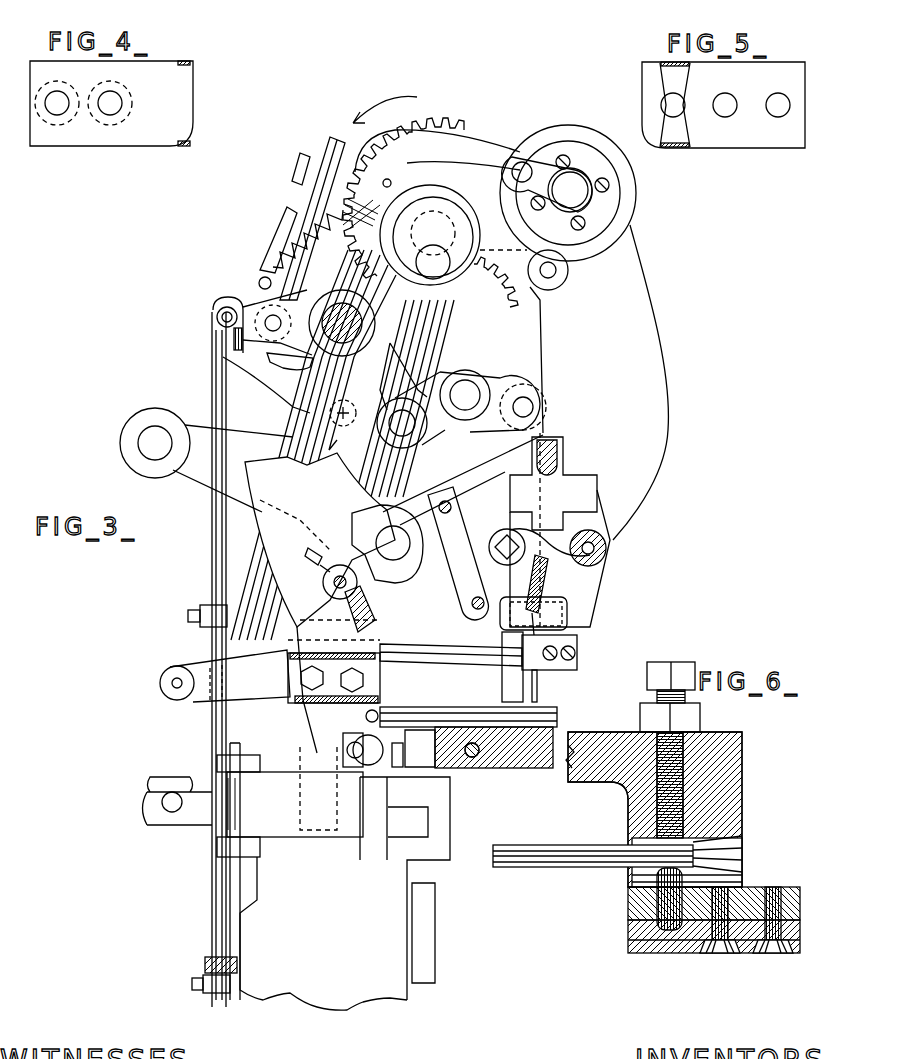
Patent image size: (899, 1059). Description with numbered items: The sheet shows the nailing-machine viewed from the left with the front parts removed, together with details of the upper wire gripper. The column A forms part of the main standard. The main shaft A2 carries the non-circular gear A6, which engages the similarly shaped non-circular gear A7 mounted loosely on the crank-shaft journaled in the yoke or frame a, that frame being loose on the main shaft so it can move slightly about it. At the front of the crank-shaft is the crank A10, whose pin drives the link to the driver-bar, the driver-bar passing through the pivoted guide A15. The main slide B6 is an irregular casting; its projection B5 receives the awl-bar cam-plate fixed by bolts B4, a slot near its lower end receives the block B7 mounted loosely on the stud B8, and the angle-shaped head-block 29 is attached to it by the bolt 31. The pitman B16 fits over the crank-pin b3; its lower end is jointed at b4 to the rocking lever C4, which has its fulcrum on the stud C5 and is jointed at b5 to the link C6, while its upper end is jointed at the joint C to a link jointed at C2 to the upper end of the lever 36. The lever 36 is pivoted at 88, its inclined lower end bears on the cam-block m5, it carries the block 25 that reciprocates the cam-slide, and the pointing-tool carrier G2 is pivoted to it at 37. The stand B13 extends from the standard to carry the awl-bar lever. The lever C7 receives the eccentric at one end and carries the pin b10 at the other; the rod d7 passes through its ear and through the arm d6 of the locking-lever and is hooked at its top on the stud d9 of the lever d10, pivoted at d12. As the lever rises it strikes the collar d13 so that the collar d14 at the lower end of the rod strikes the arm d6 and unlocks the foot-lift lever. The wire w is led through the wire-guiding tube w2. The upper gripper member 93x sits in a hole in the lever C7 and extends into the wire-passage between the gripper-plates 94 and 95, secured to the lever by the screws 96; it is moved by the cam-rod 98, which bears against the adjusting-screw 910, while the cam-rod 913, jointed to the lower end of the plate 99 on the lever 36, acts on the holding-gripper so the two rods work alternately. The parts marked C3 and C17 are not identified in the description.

In FIG. 4, the gripper-plate 95 is at (182, 89).
In FIG. 6, the gripper-plate 95 is at (640, 945).
In FIG. 3, the gripper-plate 95 is at (578, 648).
In FIG. 5, the gripper-plate 94 is at (757, 140).
In FIG. 6, the gripper-plate 94 is at (640, 930).
In FIG. 6, the adjusting-screw 910 is at (678, 668).
In FIG. 6, the lever C7 is at (735, 752).
In FIG. 3, the lever C7 is at (503, 668).
In FIG. 6, the cam-rod 98 is at (580, 845).
In FIG. 3, the cam-rod 98 is at (450, 652).
In FIG. 6, the upper gripper member 93x is at (657, 878).
In FIG. 6, the screws 96 is at (778, 968).
In FIG. 3, the screws 96 is at (578, 658).
In FIG. 3, the lever 36 is at (310, 755).
In FIG. 3, the non-circular gear A6 is at (437, 112).
In FIG. 3, the main shaft A2 is at (450, 213).
In FIG. 3, the crank-pin b3 is at (427, 250).
In FIG. 3, the yoke or frame a is at (462, 155).
In FIG. 3, the non-circular gear A7 is at (503, 283).
In FIG. 3, the crank A10 is at (540, 168).
In FIG. 3, the main slide B6 is at (582, 134).
In FIG. 3, the pivot d12 is at (280, 316).
In FIG. 3, the stud d9 is at (226, 305).
In FIG. 3, the lever d10 is at (274, 386).
In FIG. 3, the rod d7 is at (213, 560).
In FIG. 3, the stand B13 is at (178, 470).
In FIG. 3, the joint b4 is at (350, 420).
In FIG. 3, the pitman B16 is at (392, 386).
In FIG. 3, the rocking lever C4 is at (445, 420).
In FIG. 3, the stud C5 is at (468, 382).
In FIG. 3, the joint b5 is at (524, 397).
In FIG. 3, the link C6 is at (513, 443).
In FIG. 3, the joint C is at (553, 483).
In FIG. 3, the guide A15 is at (557, 455).
In FIG. 3, the joint C2 is at (603, 584).
In FIG. 3, the pivot C3 is at (489, 546).
In FIG. 3, the projection B5 is at (462, 524).
In FIG. 3, the bolts B4 is at (478, 597).
In FIG. 3, the pivot 88 is at (387, 544).
In FIG. 3, the pivot 37 is at (340, 576).
In FIG. 3, the pointing-tool carrier G2 is at (346, 612).
In FIG. 3, the collar d13 is at (211, 627).
In FIG. 3, the pin b10 is at (177, 677).
In FIG. 3, the lever C17 is at (200, 702).
In FIG. 3, the plate 99 is at (385, 664).
In FIG. 3, the wire-guiding tube w2 is at (543, 595).
In FIG. 3, the wire w is at (538, 687).
In FIG. 3, the cam-rod 913 is at (558, 717).
In FIG. 3, the head-block 29 is at (550, 768).
In FIG. 3, the bolt 31 is at (471, 758).
In FIG. 3, the block B7 is at (385, 742).
In FIG. 3, the stud B8 is at (395, 760).
In FIG. 3, the block 25 is at (348, 745).
In FIG. 3, the cam-block m5 is at (253, 806).
In FIG. 3, the column A is at (318, 876).
In FIG. 3, the arm d6 is at (208, 960).
In FIG. 3, the collar d14 is at (214, 992).